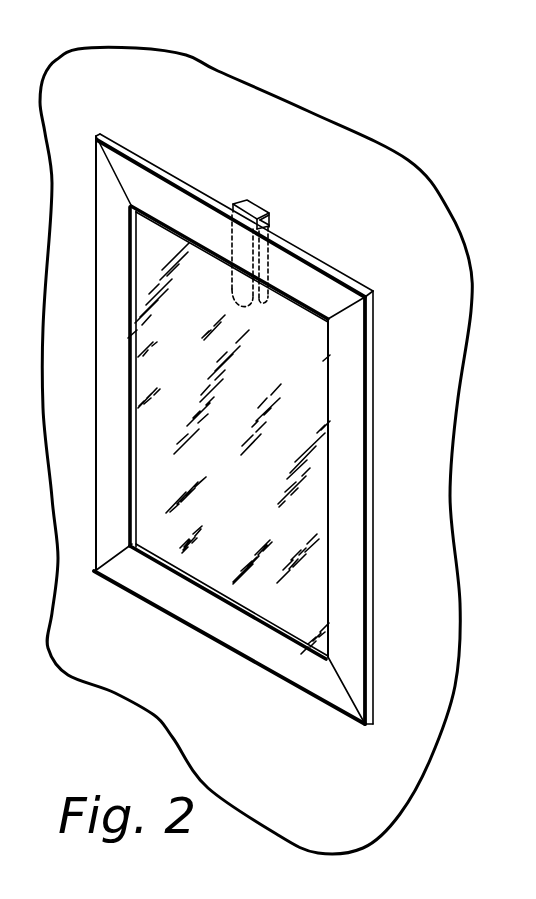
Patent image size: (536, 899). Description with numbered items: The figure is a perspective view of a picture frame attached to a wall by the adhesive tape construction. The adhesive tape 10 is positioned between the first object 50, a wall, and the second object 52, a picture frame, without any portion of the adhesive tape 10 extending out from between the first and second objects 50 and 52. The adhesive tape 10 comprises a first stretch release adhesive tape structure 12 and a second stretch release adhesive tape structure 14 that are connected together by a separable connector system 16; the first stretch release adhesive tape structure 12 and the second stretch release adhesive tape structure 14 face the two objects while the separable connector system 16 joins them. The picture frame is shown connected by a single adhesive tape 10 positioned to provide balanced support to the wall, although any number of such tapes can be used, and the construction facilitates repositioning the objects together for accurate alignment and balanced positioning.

The adhesive tape construction 10 is at (270, 202).
The first stretch release adhesive tape structure 12 is at (295, 222).
The second stretch release adhesive tape structure 14 is at (270, 174).
The separable connector system 16 is at (257, 207).
The first object 50 is at (123, 95).
The second object 52 is at (343, 340).